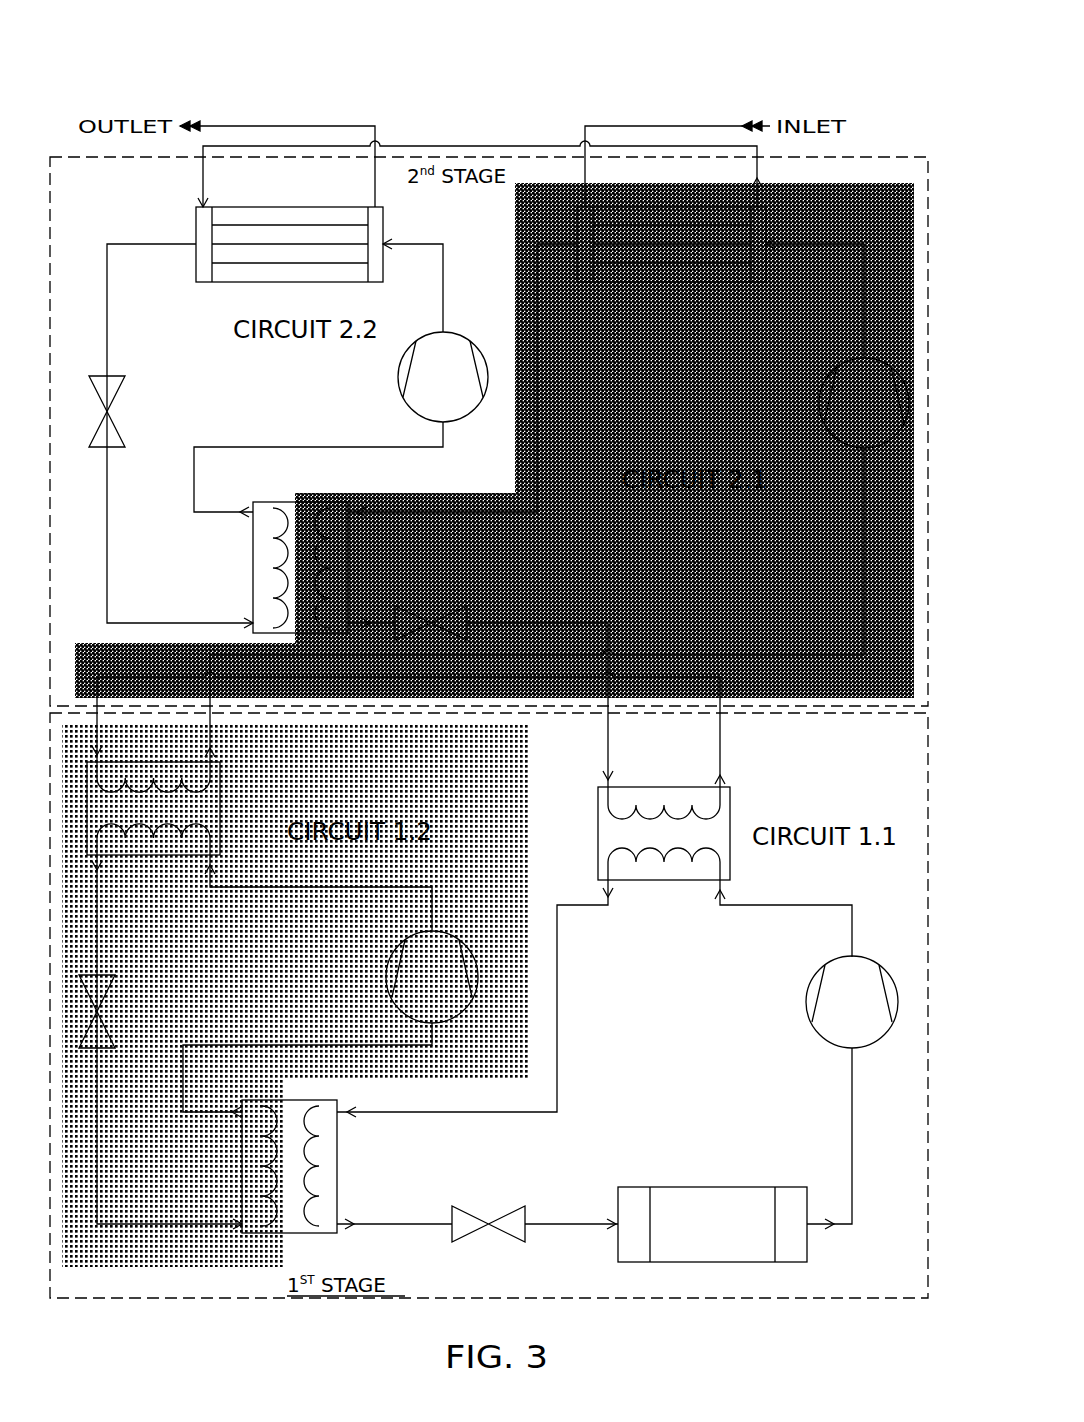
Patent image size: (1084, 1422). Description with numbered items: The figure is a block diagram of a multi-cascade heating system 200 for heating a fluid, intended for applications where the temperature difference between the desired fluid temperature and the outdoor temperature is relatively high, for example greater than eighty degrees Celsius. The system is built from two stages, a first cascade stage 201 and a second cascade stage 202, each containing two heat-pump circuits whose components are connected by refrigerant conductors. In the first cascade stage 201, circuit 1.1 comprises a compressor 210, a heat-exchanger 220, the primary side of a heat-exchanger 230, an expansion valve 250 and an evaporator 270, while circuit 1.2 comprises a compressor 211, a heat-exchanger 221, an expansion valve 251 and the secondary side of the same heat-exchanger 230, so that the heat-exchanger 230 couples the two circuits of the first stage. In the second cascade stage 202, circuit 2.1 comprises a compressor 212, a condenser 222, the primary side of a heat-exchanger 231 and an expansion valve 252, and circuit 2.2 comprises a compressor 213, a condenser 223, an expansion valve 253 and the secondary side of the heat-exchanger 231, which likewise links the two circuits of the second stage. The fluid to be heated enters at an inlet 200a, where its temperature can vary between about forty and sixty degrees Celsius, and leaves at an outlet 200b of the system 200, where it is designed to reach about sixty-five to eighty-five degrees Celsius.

The multi-cascade heating system 200 is at (856, 65).
The inlet 200a is at (667, 122).
The outlet 200b is at (233, 122).
The first cascade stage 201 is at (307, 1298).
The second cascade stage 202 is at (443, 156).
The compressor 210 is at (807, 1008).
The compressor 211 is at (388, 985).
The compressor 212 is at (821, 415).
The compressor 213 is at (400, 410).
The heat-exchanger 220 is at (633, 881).
The heat-exchanger 221 is at (158, 856).
The condenser 222 is at (652, 283).
The condenser 223 is at (245, 283).
The heat-exchanger 230 is at (242, 1180).
The heat-exchanger 231 is at (350, 548).
The expansion valve 250 is at (486, 1222).
The expansion valve 251 is at (97, 1012).
The expansion valve 252 is at (470, 620).
The expansion valve 253 is at (107, 412).
The evaporator 270 is at (687, 1187).